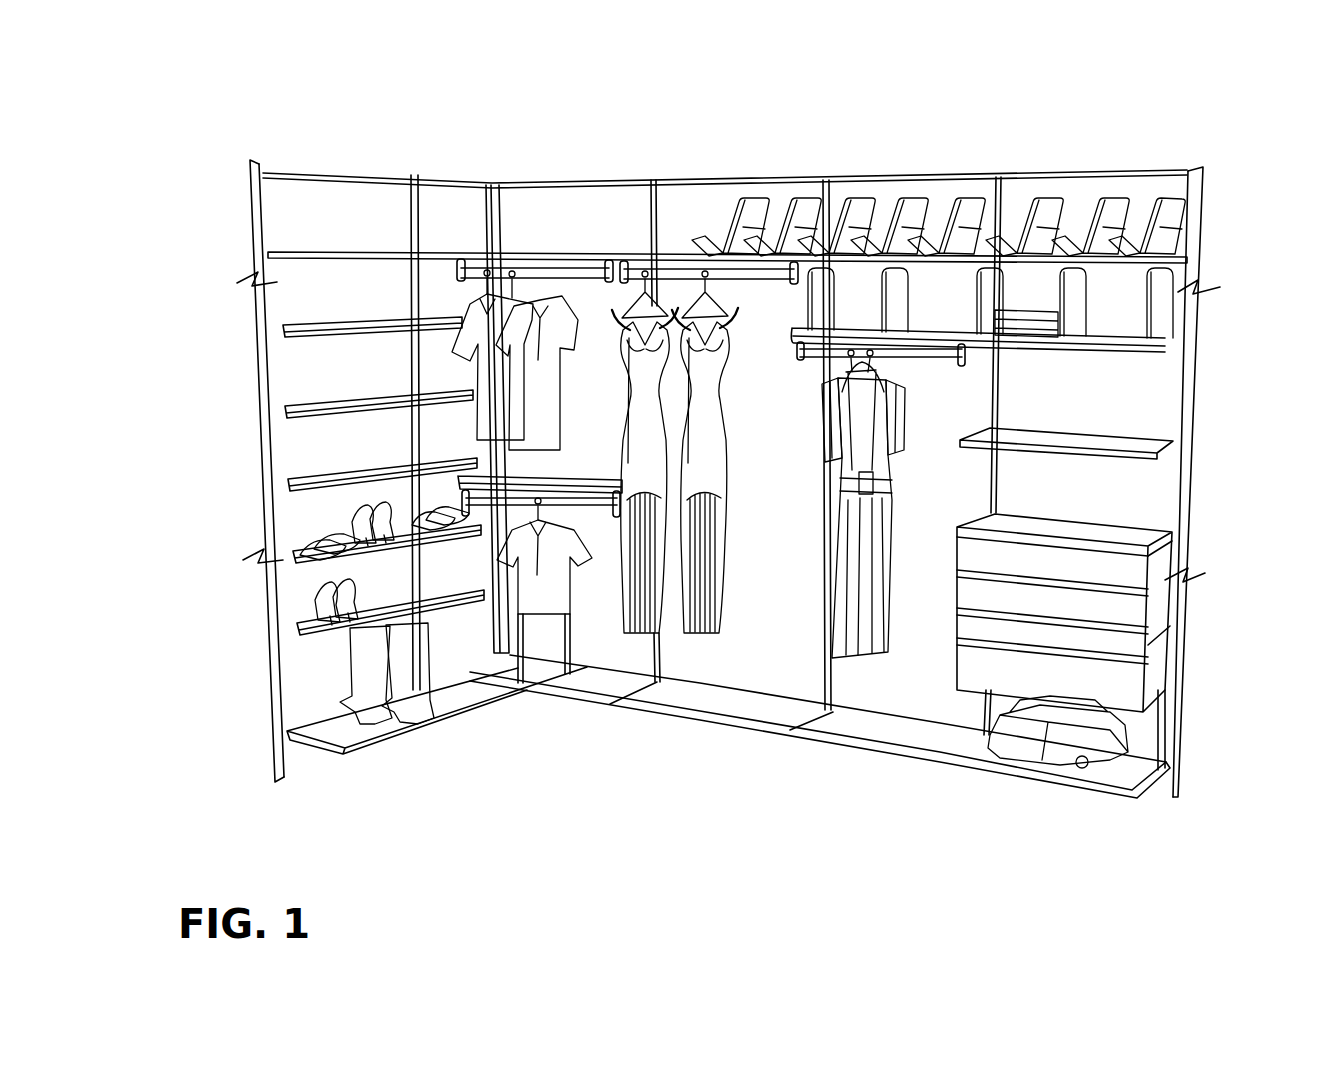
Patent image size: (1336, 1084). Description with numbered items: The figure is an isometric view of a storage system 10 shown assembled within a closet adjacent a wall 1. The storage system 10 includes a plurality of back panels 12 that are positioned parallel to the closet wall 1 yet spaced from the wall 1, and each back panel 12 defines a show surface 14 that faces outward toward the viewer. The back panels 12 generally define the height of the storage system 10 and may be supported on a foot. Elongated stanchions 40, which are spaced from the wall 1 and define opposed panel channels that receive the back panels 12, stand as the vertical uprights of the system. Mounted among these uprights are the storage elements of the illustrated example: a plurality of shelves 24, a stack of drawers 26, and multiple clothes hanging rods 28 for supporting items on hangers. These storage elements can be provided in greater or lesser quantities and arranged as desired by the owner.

The storage system 10 is at (547, 156).
The wall 1 is at (280, 715).
The back panel 12 is at (1125, 373).
The show surface 14 is at (330, 205).
The shelf 24 is at (423, 250).
The drawers 26 is at (1153, 662).
The clothes hanging rod 28 is at (580, 262).
The stanchion 40 is at (250, 205).